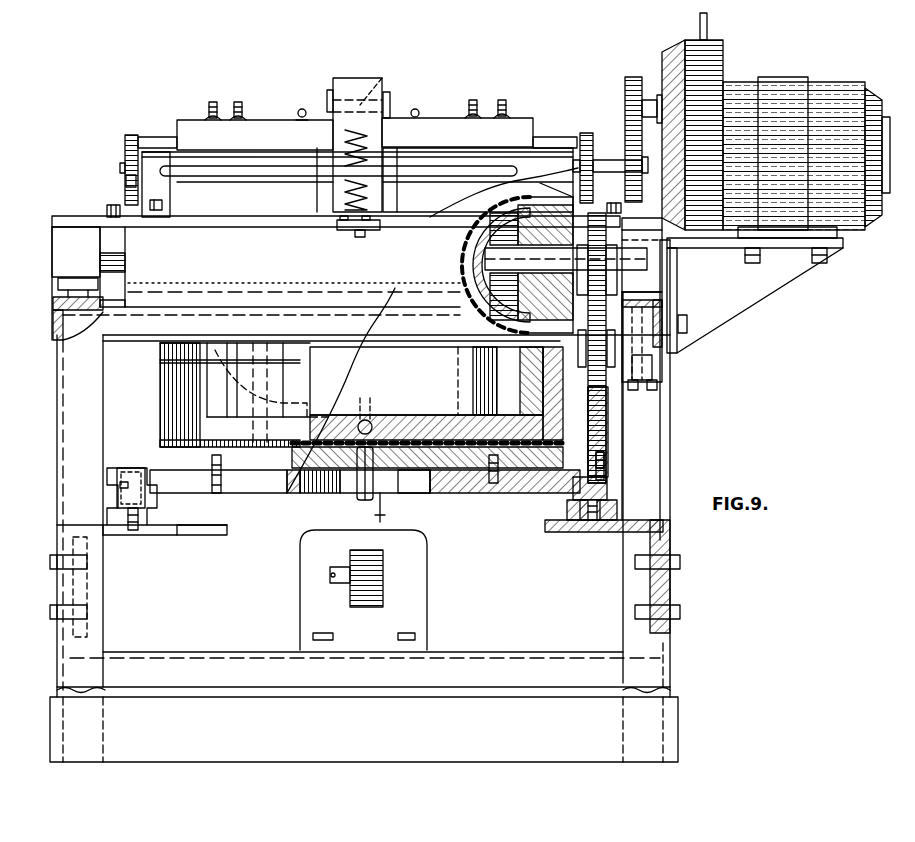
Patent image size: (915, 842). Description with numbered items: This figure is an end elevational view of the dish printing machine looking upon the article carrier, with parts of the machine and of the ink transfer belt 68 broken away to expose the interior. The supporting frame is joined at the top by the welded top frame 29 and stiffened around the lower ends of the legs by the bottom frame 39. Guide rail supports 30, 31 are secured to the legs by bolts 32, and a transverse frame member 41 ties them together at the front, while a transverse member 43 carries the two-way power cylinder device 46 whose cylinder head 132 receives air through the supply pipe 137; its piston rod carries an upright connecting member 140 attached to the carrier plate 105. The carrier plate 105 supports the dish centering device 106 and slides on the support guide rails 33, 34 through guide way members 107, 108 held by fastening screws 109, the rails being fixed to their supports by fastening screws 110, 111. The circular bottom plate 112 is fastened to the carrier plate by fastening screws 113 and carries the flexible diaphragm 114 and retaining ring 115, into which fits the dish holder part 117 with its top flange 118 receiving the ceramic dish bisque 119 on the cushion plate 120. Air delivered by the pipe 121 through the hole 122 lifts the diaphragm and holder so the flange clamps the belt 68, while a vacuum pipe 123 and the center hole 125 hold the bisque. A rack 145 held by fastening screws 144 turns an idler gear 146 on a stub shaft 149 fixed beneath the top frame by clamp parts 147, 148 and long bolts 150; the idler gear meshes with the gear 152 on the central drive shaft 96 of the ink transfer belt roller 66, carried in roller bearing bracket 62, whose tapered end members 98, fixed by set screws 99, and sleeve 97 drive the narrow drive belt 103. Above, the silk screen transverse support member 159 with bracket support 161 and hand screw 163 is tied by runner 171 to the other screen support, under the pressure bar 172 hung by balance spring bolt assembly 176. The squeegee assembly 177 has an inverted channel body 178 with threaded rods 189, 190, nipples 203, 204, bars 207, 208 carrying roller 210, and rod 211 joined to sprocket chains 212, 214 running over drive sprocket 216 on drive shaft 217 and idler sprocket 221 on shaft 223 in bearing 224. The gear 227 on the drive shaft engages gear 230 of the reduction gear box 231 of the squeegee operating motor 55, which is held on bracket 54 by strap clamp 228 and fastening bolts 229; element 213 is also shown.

The top frame 29 is at (253, 310).
The guide rail support 30 is at (565, 532).
The guide rail support 31 is at (162, 530).
The bolts 32 is at (50, 585).
The support guide rail 33 is at (567, 508).
The support guide rail 34 is at (150, 510).
The bottom frame 39 is at (395, 752).
The transverse frame member 41 is at (204, 532).
The transverse member 43 is at (222, 660).
The power cylinder device 46 is at (300, 576).
The bracket 54 is at (738, 305).
The squeegee operating motor 55 is at (828, 80).
The roller bearing bracket 62 is at (650, 262).
The ink transfer belt roller 66 is at (490, 204).
The ink transfer belt 68 is at (358, 276).
The central drive shaft 96 is at (468, 262).
The sleeve 97 is at (565, 192).
The tapered end members 98 is at (542, 212).
The set screws 99 is at (522, 292).
The drive belt 103 is at (585, 212).
The carrier plate 105 is at (253, 490).
The dish centering device 106 is at (160, 418).
The guide way member 107 is at (605, 490).
The guide way member 108 is at (147, 472).
The fastening screws 109 is at (118, 472).
The fastening screws 110 is at (593, 522).
The fastening screws 111 is at (133, 530).
The circular bottom plate 112 is at (596, 460).
The fastening screws 113 is at (216, 493).
The flexible diaphragm 114 is at (570, 440).
The retaining ring 115 is at (575, 375).
The dish holder part 117 is at (400, 425).
The top flange 118 is at (162, 352).
The ceramic dish bisque 119 is at (440, 364).
The cushion plate 120 is at (370, 412).
The pipe 121 is at (355, 490).
The hole 122 is at (408, 492).
The vacuum pipe 123 is at (302, 362).
The center hole 125 is at (352, 390).
The cylinder head 132 is at (302, 618).
The air supply pipe 137 is at (328, 583).
The upright connecting member 140 is at (396, 510).
The fastening screws 144 is at (604, 466).
The rack 145 is at (605, 425).
The idler gear 146 is at (600, 365).
The clamp part 147 is at (655, 360).
The clamp part 148 is at (657, 312).
The stub shaft 149 is at (578, 350).
The long bolts 150 is at (657, 384).
The gear 152 is at (625, 292).
The silk screen transverse support member 159 is at (215, 222).
The bracket support 161 is at (62, 252).
The hand screw 163 is at (65, 280).
The runner 171 is at (108, 205).
The pressure bar 172 is at (358, 85).
The balance spring bolt assembly 176 is at (370, 142).
The squeegee assembly 177 is at (276, 115).
The inverted channel body 178 is at (428, 130).
The threaded rods 189 is at (238, 102).
The threaded rods 190 is at (212, 102).
The nipple 203 is at (313, 103).
The nipple 204 is at (410, 114).
The bar 207 is at (330, 90).
The bar 208 is at (390, 100).
The roller 210 is at (384, 82).
The rod 211 is at (157, 137).
The sprocket chain 212 is at (135, 135).
The plate 213 is at (545, 138).
The sprocket chain 214 is at (576, 160).
The drive sprocket 216 is at (587, 133).
The drive shaft 217 is at (612, 165).
The idler sprocket 221 is at (126, 185).
The shaft 223 is at (270, 178).
The bearing 224 is at (162, 188).
The gear 227 is at (642, 162).
The strap clamp 228 is at (798, 62).
The fastening bolts 229 is at (748, 263).
The gear 230 is at (628, 83).
The reduction gear box 231 is at (675, 60).